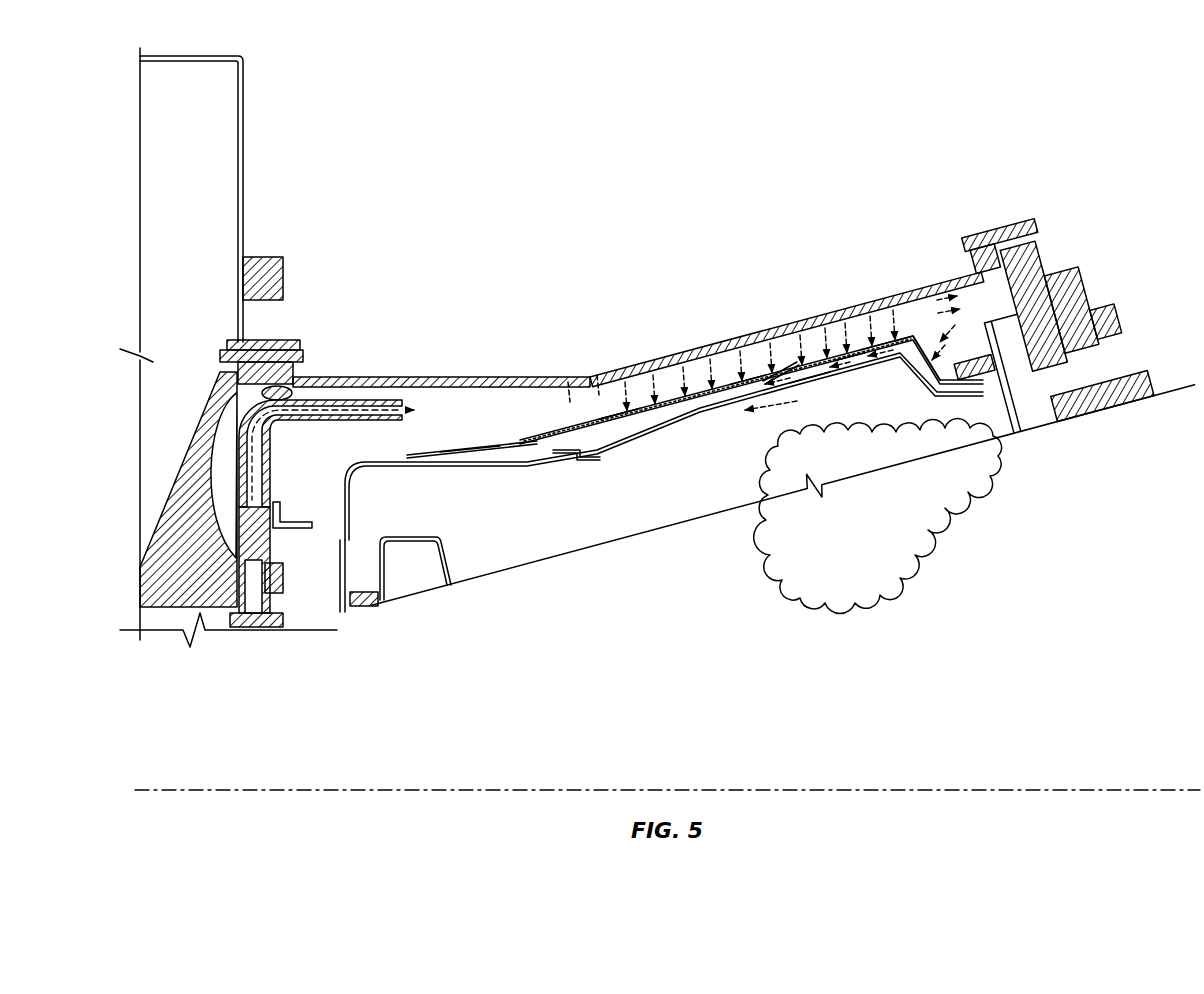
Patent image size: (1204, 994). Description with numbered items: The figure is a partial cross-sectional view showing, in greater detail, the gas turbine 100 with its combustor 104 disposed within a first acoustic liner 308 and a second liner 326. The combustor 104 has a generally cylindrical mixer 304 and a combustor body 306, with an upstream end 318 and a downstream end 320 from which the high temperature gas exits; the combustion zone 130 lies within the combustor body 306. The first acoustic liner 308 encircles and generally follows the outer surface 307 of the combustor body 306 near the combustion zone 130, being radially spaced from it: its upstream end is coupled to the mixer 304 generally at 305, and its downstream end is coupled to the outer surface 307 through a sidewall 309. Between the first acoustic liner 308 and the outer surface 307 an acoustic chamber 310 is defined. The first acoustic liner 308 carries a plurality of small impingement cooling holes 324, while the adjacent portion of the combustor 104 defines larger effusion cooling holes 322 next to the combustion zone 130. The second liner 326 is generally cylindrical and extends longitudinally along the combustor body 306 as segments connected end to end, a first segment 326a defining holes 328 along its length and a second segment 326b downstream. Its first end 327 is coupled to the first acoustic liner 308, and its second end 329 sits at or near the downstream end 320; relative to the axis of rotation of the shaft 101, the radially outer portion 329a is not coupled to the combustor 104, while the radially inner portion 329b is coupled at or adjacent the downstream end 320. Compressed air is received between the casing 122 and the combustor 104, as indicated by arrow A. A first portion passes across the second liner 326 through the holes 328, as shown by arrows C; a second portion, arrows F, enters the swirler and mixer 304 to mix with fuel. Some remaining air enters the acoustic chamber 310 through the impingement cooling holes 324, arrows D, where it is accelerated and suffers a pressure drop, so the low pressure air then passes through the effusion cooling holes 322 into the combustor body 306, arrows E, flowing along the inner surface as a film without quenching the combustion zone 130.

The gas turbine 100 is at (1041, 105).
The shaft 101 is at (828, 789).
The combustor 104 is at (1109, 488).
The casing 122 is at (948, 289).
The combustion zone 130 is at (843, 559).
The mixer 304 is at (968, 348).
The coupling location of first acoustic liner to mixer 305 is at (968, 390).
The combustor body 306 is at (617, 410).
The outer surface 307 is at (728, 400).
The first acoustic liner 308 is at (881, 345).
The sidewall 309 is at (748, 388).
The acoustic chamber 310 is at (850, 356).
The upstream end 318 is at (1119, 582).
The downstream end 320 is at (439, 657).
The effusion cooling holes 322 is at (818, 381).
The impingement cooling holes 324 is at (927, 346).
The second liner 326 is at (698, 391).
The first segment 326a is at (554, 453).
The second segment 326b is at (478, 453).
The first end 327 is at (773, 368).
The holes 328 is at (597, 430).
The second end 329 is at (405, 447).
The radially outer portion 329a is at (420, 453).
The radially inner portion 329b is at (405, 548).
The arrow A is at (390, 408).
The arrows C is at (641, 416).
The arrows D is at (810, 365).
The arrows E is at (871, 374).
The arrows F is at (947, 297).